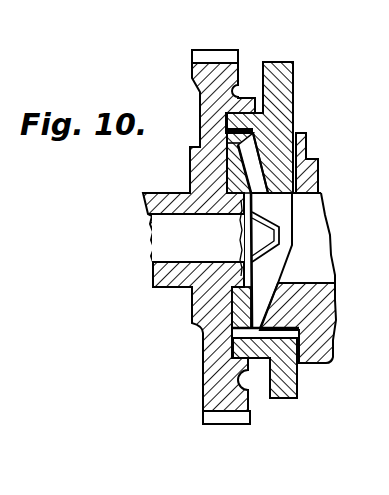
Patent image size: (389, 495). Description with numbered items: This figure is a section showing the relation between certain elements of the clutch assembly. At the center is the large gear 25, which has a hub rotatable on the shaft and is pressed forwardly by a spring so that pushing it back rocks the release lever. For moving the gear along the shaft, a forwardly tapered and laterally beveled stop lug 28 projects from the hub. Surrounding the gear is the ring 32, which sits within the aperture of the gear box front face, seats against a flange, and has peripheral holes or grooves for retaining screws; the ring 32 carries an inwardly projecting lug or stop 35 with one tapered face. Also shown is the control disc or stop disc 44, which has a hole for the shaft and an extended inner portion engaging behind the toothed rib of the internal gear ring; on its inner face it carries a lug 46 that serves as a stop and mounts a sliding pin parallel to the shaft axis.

The large gear 25 is at (208, 346).
The inwardly projecting lug or stop 35 is at (227, 138).
The control disc or stop disc 44 is at (319, 315).
The stop lug 28 is at (264, 238).
The lug 46 is at (258, 313).
The ring 32 is at (283, 383).